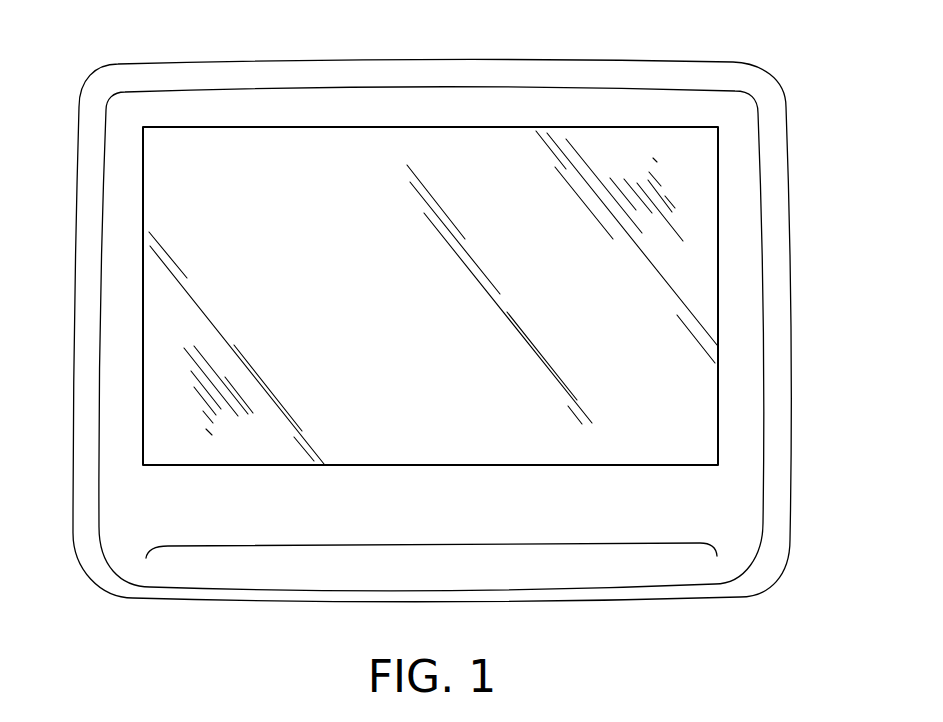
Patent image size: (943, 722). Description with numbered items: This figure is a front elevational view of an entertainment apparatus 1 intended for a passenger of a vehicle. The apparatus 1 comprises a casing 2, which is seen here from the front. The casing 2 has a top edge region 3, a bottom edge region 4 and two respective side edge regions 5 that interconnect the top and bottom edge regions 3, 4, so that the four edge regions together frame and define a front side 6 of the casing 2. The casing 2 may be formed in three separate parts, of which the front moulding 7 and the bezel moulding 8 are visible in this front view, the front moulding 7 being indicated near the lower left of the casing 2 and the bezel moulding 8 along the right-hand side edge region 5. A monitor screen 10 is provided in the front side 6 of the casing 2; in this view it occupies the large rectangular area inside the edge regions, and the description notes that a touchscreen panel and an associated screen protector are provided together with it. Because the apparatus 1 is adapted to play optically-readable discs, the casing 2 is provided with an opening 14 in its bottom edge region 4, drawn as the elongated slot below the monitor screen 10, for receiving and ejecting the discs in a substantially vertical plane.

The entertainment apparatus 1 is at (782, 56).
The casing 2 is at (732, 80).
The top edge region 3 is at (447, 73).
The bottom edge region 4 is at (632, 577).
The side edge regions 5 is at (88, 258).
The front side 6 is at (363, 107).
The front moulding 7 is at (162, 510).
The bezel moulding 8 is at (776, 396).
The monitor screen 10 is at (612, 143).
The opening 14 is at (537, 543).